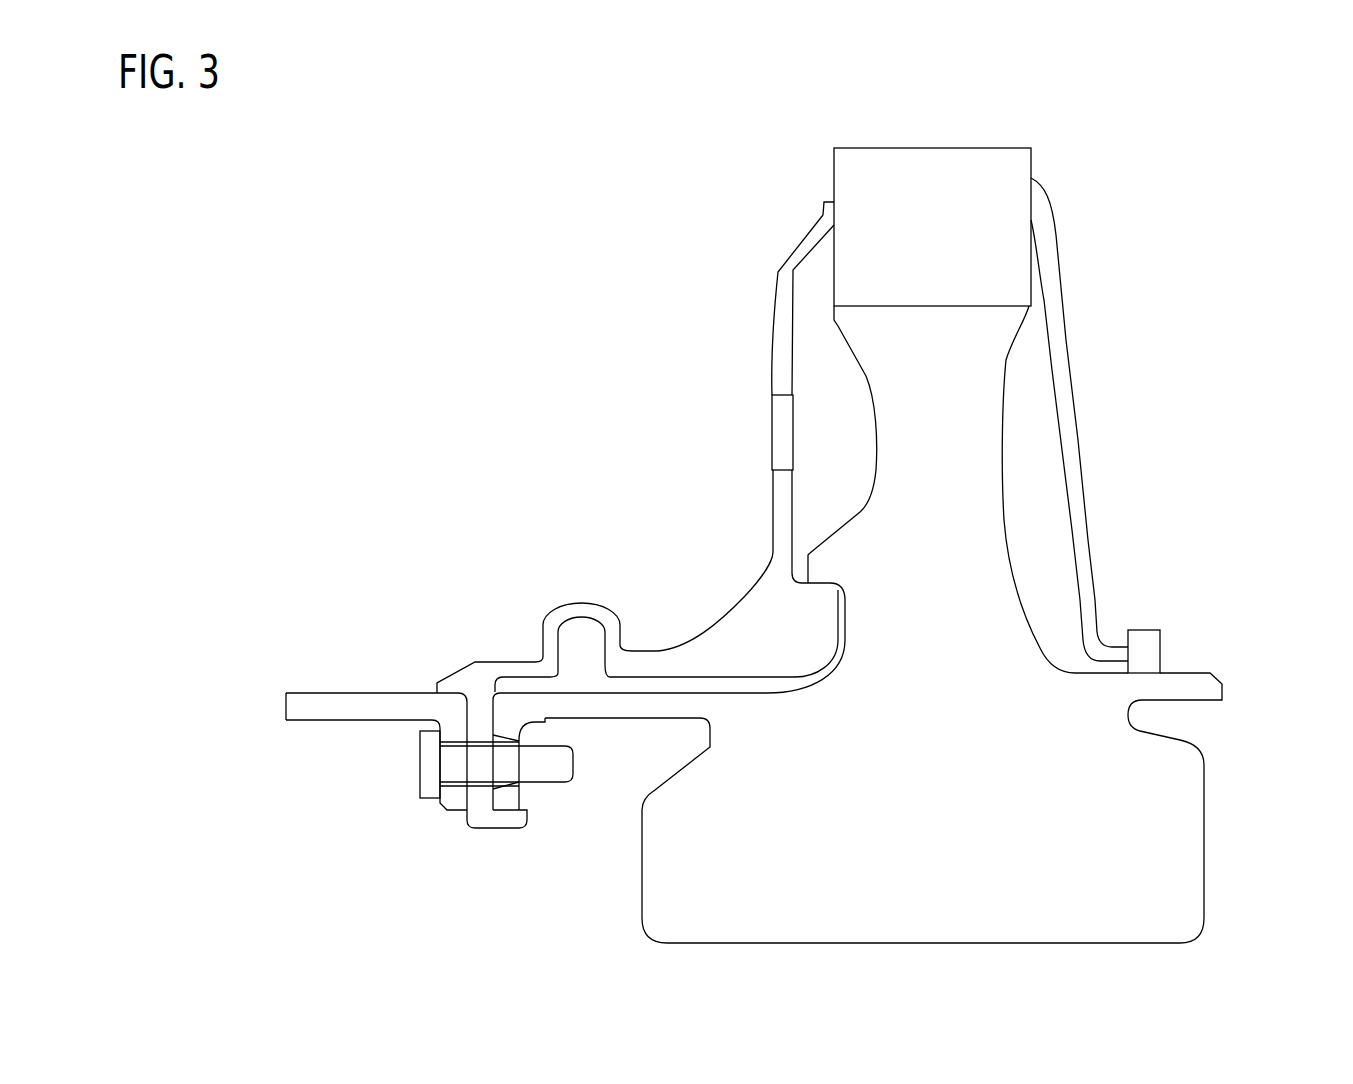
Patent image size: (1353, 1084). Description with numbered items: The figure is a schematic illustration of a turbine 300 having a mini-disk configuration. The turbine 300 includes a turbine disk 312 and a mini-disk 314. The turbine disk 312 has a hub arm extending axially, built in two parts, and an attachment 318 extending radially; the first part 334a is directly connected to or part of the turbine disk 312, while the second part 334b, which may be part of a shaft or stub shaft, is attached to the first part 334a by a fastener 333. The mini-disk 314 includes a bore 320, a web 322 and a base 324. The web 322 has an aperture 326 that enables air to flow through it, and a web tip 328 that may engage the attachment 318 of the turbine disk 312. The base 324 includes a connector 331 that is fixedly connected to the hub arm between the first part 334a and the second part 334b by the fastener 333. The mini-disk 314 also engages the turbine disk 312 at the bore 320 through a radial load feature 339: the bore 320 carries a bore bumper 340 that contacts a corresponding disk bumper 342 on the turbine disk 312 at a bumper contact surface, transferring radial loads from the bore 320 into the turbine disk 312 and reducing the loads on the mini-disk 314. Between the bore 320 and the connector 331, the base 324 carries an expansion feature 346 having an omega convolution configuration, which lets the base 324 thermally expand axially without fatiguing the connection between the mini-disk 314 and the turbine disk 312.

The turbine 300 is at (456, 271).
The turbine disk 312 is at (1178, 769).
The mini-disk 314 is at (803, 640).
The attachment 318 is at (878, 298).
The bore 320 is at (768, 652).
The web 322 is at (782, 315).
The base 324 is at (663, 648).
The aperture 326 is at (804, 432).
The web tip 328 is at (824, 205).
The connector 331 is at (486, 813).
The fastener 333 is at (423, 773).
The first part of hub arm 334a is at (657, 702).
The second part of hub arm 334b is at (358, 717).
The radial load feature 339 is at (867, 576).
The bore bumper 340 is at (818, 588).
The disk bumper 342 is at (820, 558).
The expansion feature 346 is at (568, 600).